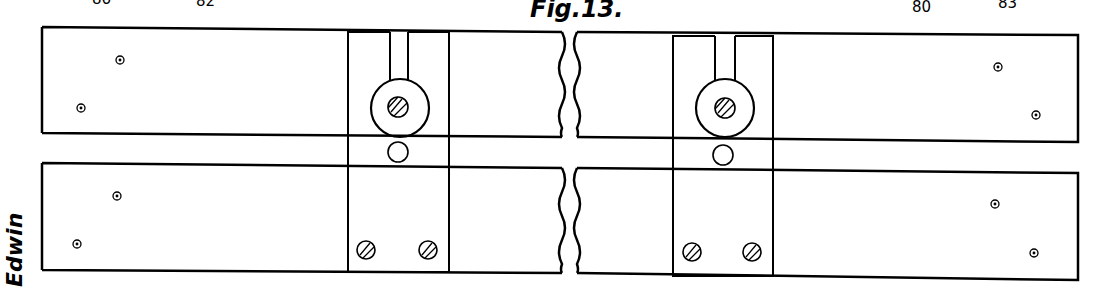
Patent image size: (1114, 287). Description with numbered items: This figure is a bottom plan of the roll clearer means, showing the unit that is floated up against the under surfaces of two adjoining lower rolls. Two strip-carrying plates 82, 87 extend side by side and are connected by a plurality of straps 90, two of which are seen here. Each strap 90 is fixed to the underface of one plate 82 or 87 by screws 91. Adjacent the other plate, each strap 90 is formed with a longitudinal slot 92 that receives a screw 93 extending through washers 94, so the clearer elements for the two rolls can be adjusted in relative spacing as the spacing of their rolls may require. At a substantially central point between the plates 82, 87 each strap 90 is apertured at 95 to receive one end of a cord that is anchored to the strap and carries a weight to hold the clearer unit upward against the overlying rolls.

The strip-carrying plate 82 is at (1063, 217).
The strip-carrying plate 87 is at (1067, 81).
The strap 90 is at (354, 197).
The screw 91 is at (357, 250).
The longitudinal slot 92 is at (398, 62).
The screw 93 is at (391, 105).
The washer 94 is at (378, 117).
The aperture 95 is at (388, 152).